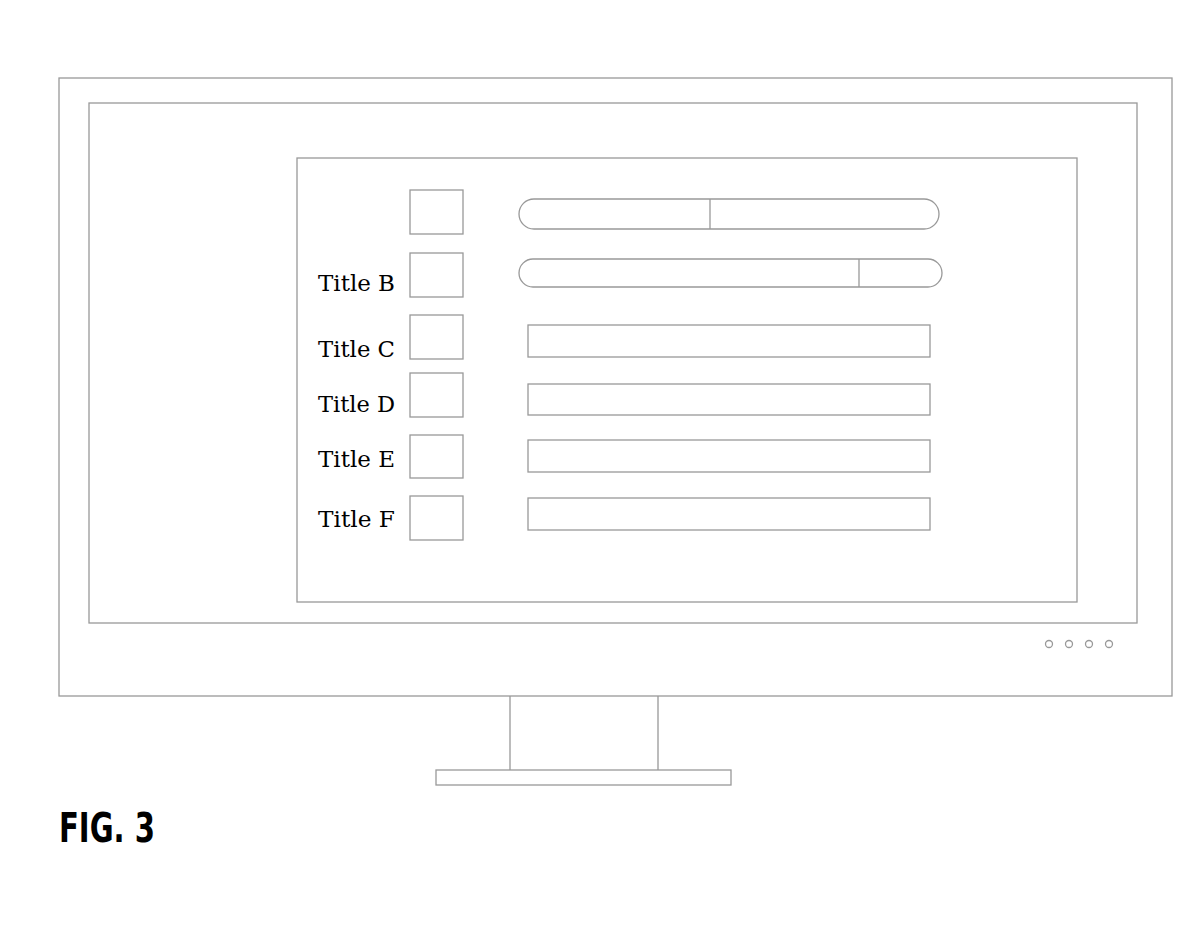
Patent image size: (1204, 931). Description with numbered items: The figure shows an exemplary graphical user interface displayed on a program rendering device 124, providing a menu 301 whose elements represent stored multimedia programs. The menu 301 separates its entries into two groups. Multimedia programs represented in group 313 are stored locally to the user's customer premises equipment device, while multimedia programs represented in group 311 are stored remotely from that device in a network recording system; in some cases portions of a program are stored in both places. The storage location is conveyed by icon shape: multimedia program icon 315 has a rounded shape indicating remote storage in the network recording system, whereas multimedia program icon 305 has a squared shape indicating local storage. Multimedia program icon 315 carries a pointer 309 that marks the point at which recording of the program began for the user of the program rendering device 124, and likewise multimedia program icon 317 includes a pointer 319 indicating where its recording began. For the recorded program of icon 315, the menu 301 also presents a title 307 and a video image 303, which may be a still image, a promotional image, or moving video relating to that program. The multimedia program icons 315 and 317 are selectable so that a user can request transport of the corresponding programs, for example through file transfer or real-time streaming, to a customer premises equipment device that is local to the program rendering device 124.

The program rendering device 124 is at (1133, 78).
The menu 301 is at (867, 158).
The video image 303 is at (433, 190).
The multimedia program icon 305 is at (570, 355).
The title 307 is at (340, 200).
The pointer 309 is at (711, 186).
The group 311 is at (776, 237).
The group 313 is at (779, 428).
The multimedia program icon 315 is at (560, 225).
The multimedia program icon 317 is at (565, 286).
The pointer 319 is at (859, 258).